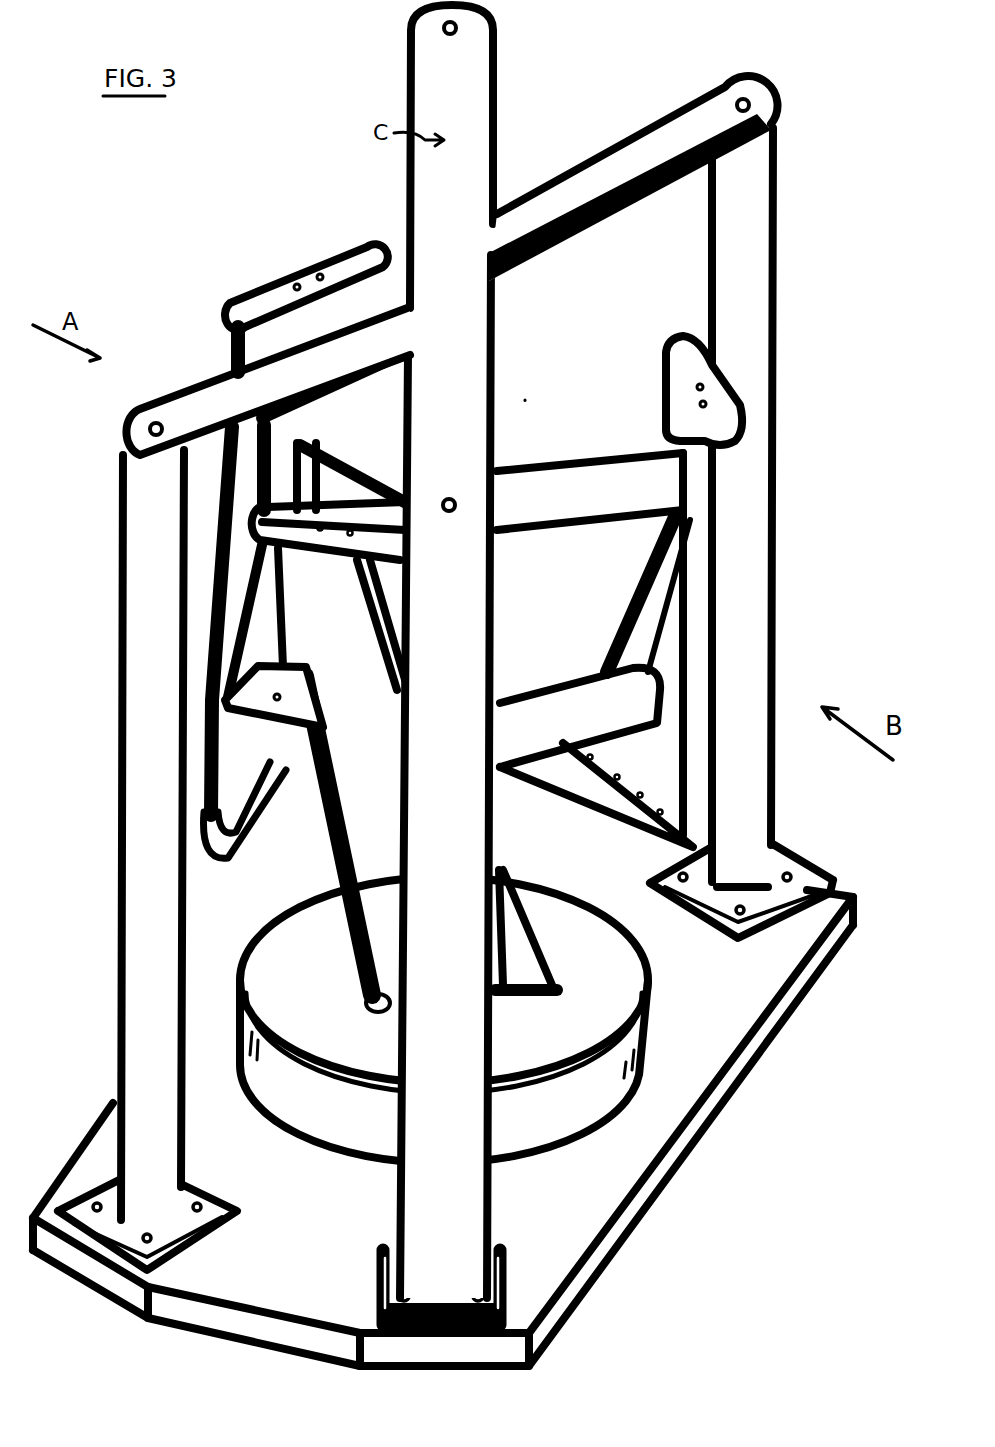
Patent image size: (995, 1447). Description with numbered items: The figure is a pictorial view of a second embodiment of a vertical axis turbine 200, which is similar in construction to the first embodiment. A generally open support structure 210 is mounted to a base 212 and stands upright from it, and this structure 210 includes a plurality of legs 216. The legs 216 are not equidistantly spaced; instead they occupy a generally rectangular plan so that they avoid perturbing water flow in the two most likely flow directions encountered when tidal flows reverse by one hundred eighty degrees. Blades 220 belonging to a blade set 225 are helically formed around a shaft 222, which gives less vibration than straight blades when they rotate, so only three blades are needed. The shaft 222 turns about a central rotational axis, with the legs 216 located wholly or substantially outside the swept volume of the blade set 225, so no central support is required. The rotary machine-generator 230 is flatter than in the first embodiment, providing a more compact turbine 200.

The turbine 200 is at (215, 186).
The support structure 210 is at (115, 457).
The base 212 is at (590, 1217).
The legs 216 is at (513, 125).
The blades 220 is at (233, 330).
The shaft 222 is at (500, 205).
The blade set 225 is at (532, 382).
The rotary machine-generator 230 is at (606, 1034).